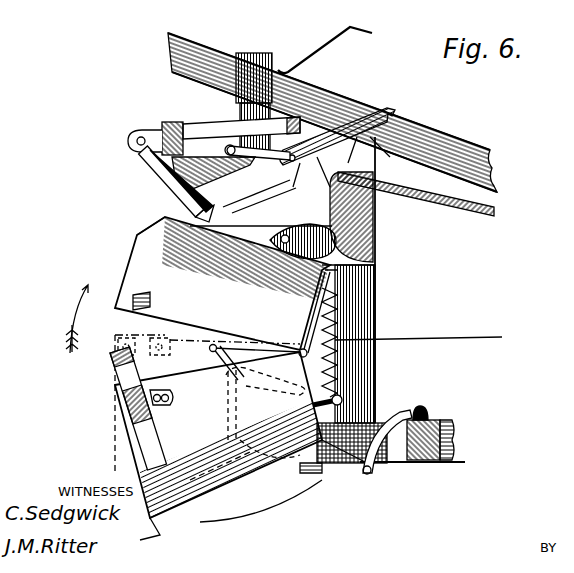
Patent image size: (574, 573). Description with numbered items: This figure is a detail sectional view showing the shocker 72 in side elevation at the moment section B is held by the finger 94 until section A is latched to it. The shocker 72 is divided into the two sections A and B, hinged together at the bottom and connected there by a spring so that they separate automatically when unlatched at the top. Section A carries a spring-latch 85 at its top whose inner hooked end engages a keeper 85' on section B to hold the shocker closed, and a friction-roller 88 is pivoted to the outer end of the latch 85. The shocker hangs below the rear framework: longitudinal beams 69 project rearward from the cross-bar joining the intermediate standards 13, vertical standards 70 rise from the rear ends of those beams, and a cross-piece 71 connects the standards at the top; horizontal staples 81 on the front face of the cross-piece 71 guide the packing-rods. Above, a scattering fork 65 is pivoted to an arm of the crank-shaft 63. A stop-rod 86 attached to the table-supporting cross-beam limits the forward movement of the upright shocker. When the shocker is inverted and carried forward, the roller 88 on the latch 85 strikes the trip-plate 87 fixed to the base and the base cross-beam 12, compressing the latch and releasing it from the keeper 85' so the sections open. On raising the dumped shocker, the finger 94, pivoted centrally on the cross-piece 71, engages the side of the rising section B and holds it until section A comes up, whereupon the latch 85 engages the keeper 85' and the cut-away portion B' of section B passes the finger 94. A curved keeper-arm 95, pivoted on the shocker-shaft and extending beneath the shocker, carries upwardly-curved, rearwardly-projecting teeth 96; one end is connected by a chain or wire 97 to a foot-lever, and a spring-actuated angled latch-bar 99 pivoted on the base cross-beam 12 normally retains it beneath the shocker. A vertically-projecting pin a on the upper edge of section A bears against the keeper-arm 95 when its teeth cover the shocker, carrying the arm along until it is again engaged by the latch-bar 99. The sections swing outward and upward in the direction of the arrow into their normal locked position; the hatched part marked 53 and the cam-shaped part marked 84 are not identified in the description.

The base cross-beam 12 is at (446, 414).
The intermediate standard 13 is at (348, 344).
The spring 53 is at (343, 342).
The crank-shaft 63 is at (274, 156).
The scattering fork 65 is at (338, 136).
The longitudinal beam 69 is at (317, 170).
The vertical standard 70 is at (168, 212).
The cross-piece 71 is at (178, 120).
The shocker 72 is at (239, 363).
The horizontal staple 81 is at (223, 122).
The cam 84 is at (326, 200).
The spring-latch 85 is at (108, 371).
The keeper 85' is at (146, 291).
The stop-rod 86 is at (333, 275).
The trip-plate 87 is at (353, 440).
The friction-roller 88 is at (128, 406).
The finger 94 is at (154, 181).
The keeper-arm 95 is at (300, 480).
The teeth 96 is at (263, 506).
The chain or wire 97 is at (418, 330).
The angled latch-bar 99 is at (391, 427).
The shocker section A is at (218, 435).
The shocker section B is at (223, 283).
The cut-away portion B' is at (135, 224).
The pin a is at (150, 536).